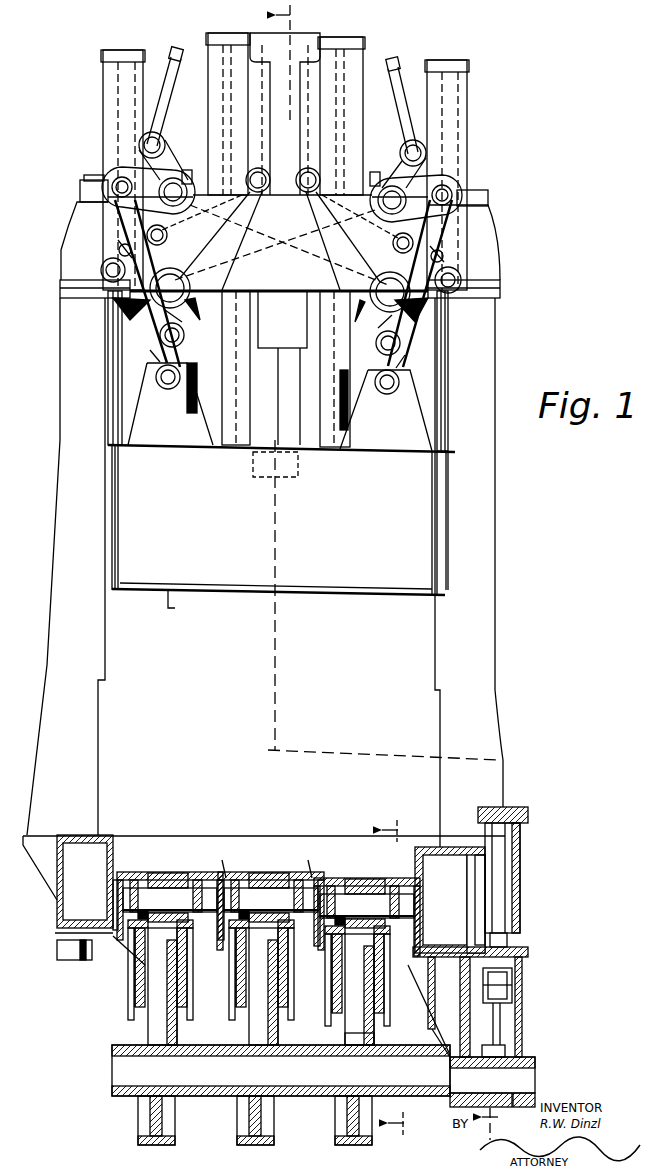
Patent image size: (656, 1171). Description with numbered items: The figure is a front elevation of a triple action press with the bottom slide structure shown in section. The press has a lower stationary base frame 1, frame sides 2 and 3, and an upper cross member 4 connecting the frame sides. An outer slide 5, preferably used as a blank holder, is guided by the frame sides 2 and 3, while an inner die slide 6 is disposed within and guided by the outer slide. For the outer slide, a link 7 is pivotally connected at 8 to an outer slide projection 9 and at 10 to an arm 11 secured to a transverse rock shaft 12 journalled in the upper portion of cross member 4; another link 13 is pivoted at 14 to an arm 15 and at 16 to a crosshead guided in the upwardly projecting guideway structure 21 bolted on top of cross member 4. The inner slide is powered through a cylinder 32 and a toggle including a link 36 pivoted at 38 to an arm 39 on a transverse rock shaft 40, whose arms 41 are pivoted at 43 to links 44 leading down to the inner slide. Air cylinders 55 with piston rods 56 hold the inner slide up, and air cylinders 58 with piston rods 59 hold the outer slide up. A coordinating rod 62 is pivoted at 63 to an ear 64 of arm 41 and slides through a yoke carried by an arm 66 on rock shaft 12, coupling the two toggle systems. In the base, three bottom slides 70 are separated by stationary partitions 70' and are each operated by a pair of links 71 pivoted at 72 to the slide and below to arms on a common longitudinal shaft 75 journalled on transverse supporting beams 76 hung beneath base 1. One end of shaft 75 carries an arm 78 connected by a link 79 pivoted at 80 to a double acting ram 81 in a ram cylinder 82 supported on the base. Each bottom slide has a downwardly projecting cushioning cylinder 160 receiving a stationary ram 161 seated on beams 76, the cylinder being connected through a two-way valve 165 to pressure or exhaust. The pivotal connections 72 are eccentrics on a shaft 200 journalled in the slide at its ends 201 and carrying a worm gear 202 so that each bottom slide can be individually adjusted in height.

The base frame 1 is at (123, 835).
The frame side 2 is at (90, 726).
The frame side 3 is at (440, 729).
The upper cross member 4 is at (72, 242).
The outer slide 5 is at (335, 570).
The inner die slide 6 is at (395, 979).
The link 7 is at (170, 352).
The pivot 8 is at (158, 377).
The outer slide projection 9 is at (380, 420).
The pivot 10 is at (114, 183).
The arm 11 is at (282, 190).
The transverse rock shaft 12 is at (175, 186).
The link 13 is at (286, 241).
The pivot 14 is at (166, 240).
The arm 15 is at (280, 225).
The pivot 16 is at (258, 172).
The guideway structure 21 is at (268, 30).
The cylinder 32 is at (302, 390).
The link 36 is at (278, 321).
The pivot 38 is at (186, 336).
The arm 39 is at (188, 318).
The transverse rock shaft 40 is at (178, 282).
The arm 41 is at (274, 313).
The pivot 43 is at (102, 268).
The link 44 is at (140, 336).
The air cylinder 55 is at (208, 38).
The piston rod 56 is at (347, 85).
The air cylinder 58 is at (103, 88).
The piston rod 59 is at (112, 376).
The rod 62 is at (163, 96).
The pivot 63 is at (120, 246).
The ear 64 is at (119, 250).
The arm 66 is at (160, 150).
The bottom slide 70 is at (268, 917).
The transverse stationary partition 70' is at (279, 861).
The link 71 is at (126, 1010).
The pivotal connection 72 is at (133, 879).
The longitudinal shaft 75 is at (118, 1066).
The transverse supporting beam 76 is at (168, 1122).
The arm 78 is at (506, 1050).
The link 79 is at (501, 1018).
The pivot 80 is at (513, 984).
The double acting ram 81 is at (521, 838).
The ram cylinder 82 is at (521, 870).
The cushioning cylinder 160 is at (140, 968).
The stationary ram 161 is at (178, 1036).
The two-way valve 165 is at (374, 1038).
The shaft 200 is at (157, 887).
The shaft end 201 is at (123, 898).
The worm gear 202 is at (136, 913).